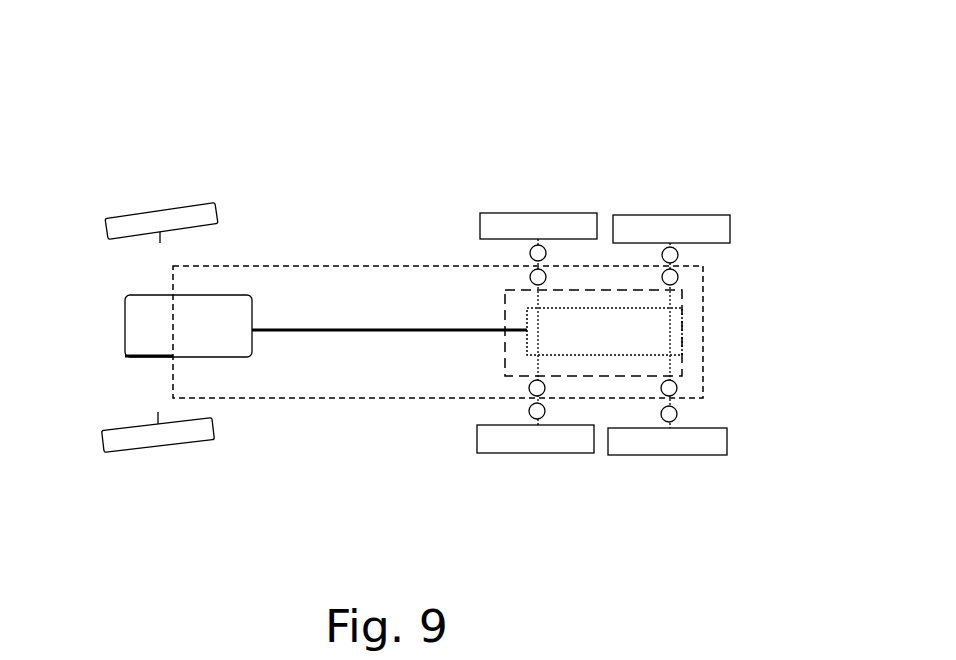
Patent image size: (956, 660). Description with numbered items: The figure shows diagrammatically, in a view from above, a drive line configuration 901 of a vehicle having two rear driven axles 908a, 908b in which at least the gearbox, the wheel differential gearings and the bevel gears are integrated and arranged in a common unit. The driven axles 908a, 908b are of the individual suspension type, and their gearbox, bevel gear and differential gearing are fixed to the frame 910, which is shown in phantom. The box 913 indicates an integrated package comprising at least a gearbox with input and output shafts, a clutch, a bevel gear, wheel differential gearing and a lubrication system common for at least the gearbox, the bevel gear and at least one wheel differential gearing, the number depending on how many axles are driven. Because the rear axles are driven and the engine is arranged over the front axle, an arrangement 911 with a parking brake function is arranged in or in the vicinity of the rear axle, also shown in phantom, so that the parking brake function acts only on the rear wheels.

The drive line configuration 901 is at (230, 88).
The frame 910 is at (325, 266).
The driven axle 908a is at (507, 293).
The driven axle 908b is at (710, 290).
The arrangement with parking brake function 911 is at (503, 377).
The integrated package 913 is at (672, 343).